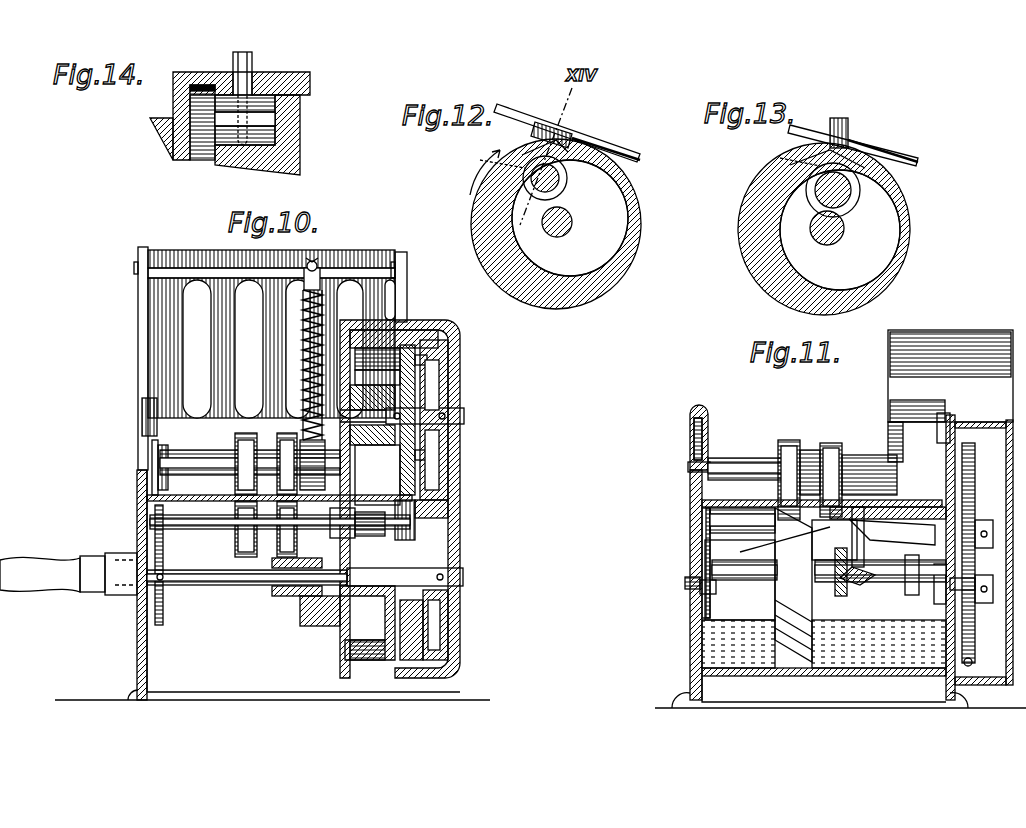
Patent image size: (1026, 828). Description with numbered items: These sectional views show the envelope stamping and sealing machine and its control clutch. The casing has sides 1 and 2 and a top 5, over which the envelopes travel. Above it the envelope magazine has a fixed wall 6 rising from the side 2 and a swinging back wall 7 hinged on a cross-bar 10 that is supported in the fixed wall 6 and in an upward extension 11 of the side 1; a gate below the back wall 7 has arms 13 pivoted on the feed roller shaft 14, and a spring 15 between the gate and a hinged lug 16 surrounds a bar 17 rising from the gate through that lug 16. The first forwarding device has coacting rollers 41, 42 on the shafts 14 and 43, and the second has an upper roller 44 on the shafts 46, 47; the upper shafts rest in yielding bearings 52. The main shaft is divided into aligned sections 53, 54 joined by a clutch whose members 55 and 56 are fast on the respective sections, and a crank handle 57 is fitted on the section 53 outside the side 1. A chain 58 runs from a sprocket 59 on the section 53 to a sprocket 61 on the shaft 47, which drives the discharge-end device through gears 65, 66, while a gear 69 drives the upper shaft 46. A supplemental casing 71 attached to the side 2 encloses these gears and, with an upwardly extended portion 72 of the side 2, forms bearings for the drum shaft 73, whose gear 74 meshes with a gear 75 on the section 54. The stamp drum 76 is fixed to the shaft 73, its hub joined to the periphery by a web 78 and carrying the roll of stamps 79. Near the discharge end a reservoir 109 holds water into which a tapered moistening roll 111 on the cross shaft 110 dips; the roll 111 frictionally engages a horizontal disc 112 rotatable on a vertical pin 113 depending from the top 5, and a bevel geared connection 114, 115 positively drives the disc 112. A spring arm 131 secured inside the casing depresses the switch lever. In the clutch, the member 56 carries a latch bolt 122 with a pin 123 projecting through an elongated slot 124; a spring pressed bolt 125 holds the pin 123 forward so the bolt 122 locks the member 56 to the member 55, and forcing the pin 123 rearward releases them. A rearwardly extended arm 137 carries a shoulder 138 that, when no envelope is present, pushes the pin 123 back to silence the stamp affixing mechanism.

In FIG. 10, the side of machine casing 1 is at (137, 539).
In FIG. 11, the side of machine casing 1 is at (690, 613).
In FIG. 11, the side of machine casing 2 is at (976, 566).
In FIG. 10, the top of casing 5 is at (279, 489).
In FIG. 11, the top of casing 5 is at (822, 496).
In FIG. 10, the fixed wall of envelope magazine 6 is at (407, 263).
In FIG. 10, the swinging back wall 7 is at (228, 376).
In FIG. 10, the cross-bar 10 is at (222, 270).
In FIG. 10, the upward extension of side wall 11 is at (138, 335).
In FIG. 10, the arms 13 is at (155, 443).
In FIG. 10, the feed roller shaft 14 is at (200, 463).
In FIG. 10, the spring 15 is at (325, 313).
In FIG. 10, the lug 16 is at (306, 266).
In FIG. 10, the bar 17 is at (317, 266).
In FIG. 10, the roller 41 is at (280, 455).
In FIG. 10, the roller 42 is at (228, 546).
In FIG. 10, the shaft 43 is at (192, 536).
In FIG. 11, the roller 44 is at (800, 449).
In FIG. 11, the shaft 46 is at (740, 466).
In FIG. 11, the shaft 47 is at (743, 543).
In FIG. 10, the yielding bearings 52 is at (142, 419).
In FIG. 11, the yielding bearings 52 is at (710, 423).
In FIG. 12, the main shaft section 53 is at (552, 237).
In FIG. 13, the main shaft section 53 is at (845, 233).
In FIG. 10, the main shaft section 53 is at (210, 587).
In FIG. 10, the main shaft section 54 is at (463, 578).
In FIG. 14, the clutch member 55 is at (173, 95).
In FIG. 12, the clutch member 55 is at (520, 280).
In FIG. 13, the clutch member 55 is at (770, 289).
In FIG. 10, the clutch member 55 is at (300, 593).
In FIG. 14, the clutch member 56 is at (222, 158).
In FIG. 12, the clutch member 56 is at (570, 218).
In FIG. 13, the clutch member 56 is at (840, 230).
In FIG. 10, the clutch member 56 is at (340, 617).
In FIG. 10, the crank handle 57 is at (55, 591).
In FIG. 11, the chain 58 is at (700, 557).
In FIG. 10, the sprocket 59 is at (165, 613).
In FIG. 11, the sprocket 61 is at (702, 523).
In FIG. 11, the gear 65 is at (974, 553).
In FIG. 11, the gear 66 is at (972, 661).
In FIG. 11, the gear 69 is at (979, 557).
In FIG. 10, the supplemental casing 71 is at (460, 541).
In FIG. 10, the upwardly extended portion of side 72 is at (428, 323).
In FIG. 10, the drum shaft 73 is at (464, 417).
In FIG. 10, the gear 74 is at (460, 449).
In FIG. 10, the gear 75 is at (440, 521).
In FIG. 10, the stamp drum 76 is at (377, 366).
In FIG. 10, the web 78 is at (396, 389).
In FIG. 10, the roll of stamps 79 is at (375, 445).
In FIG. 11, the reservoir 109 is at (868, 673).
In FIG. 11, the cross shaft 110 is at (740, 580).
In FIG. 11, the moistening roll 111 is at (794, 585).
In FIG. 11, the disc 112 is at (798, 541).
In FIG. 11, the vertical pin 113 is at (888, 530).
In FIG. 11, the bevel gear 114 is at (880, 581).
In FIG. 11, the bevel gear 115 is at (868, 584).
In FIG. 14, the latch bolt 122 is at (200, 128).
In FIG. 12, the latch bolt 122 is at (562, 186).
In FIG. 13, the latch bolt 122 is at (845, 196).
In FIG. 14, the pin 123 is at (252, 58).
In FIG. 12, the pin 123 is at (572, 131).
In FIG. 13, the pin 123 is at (848, 123).
In FIG. 12, the elongated slot 124 is at (565, 153).
In FIG. 13, the elongated slot 124 is at (866, 169).
In FIG. 12, the spring pressed bolt 125 is at (520, 151).
In FIG. 13, the spring pressed bolt 125 is at (780, 163).
In FIG. 11, the spring arm 131 is at (950, 403).
In FIG. 12, the rearwardly extended arm 137 is at (530, 111).
In FIG. 13, the rearwardly extended arm 137 is at (818, 129).
In FIG. 12, the shoulder 138 is at (608, 143).
In FIG. 13, the shoulder 138 is at (850, 143).